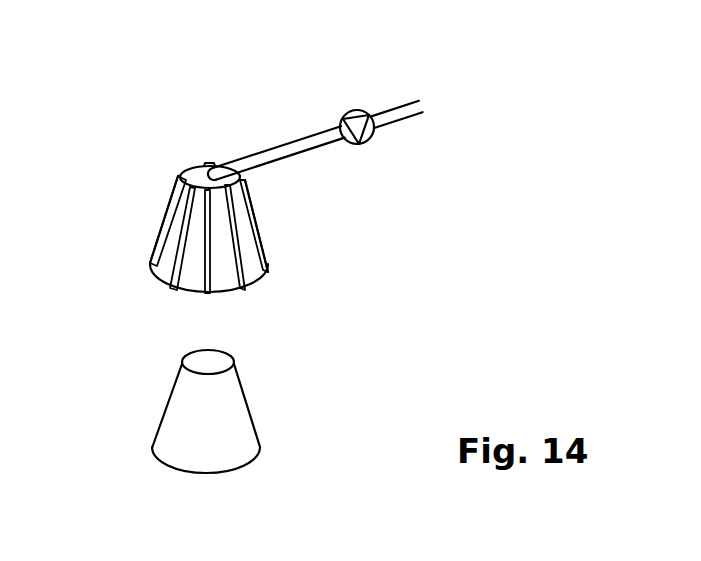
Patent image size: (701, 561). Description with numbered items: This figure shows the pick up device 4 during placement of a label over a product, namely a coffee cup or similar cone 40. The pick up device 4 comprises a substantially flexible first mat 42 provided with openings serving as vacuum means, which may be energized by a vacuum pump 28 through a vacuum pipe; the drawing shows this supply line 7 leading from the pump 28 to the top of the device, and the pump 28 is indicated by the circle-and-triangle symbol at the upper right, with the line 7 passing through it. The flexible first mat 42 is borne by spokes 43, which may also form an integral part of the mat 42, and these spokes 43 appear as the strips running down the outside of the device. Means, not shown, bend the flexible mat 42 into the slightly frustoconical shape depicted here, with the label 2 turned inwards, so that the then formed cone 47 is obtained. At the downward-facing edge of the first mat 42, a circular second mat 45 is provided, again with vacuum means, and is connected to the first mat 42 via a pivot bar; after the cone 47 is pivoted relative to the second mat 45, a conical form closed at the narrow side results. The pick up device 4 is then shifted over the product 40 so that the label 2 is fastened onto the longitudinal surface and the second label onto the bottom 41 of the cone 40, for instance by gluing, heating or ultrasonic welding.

The label 2 is at (149, 290).
The pick up device 4 is at (166, 154).
The second mat 45 is at (198, 175).
The cone 47 is at (143, 216).
The first mat 42 is at (165, 257).
The spokes 43 is at (265, 233).
The supply tube 7 is at (292, 142).
The vacuum pump 28 is at (355, 110).
The cone 40 is at (277, 398).
The bottom 41 is at (202, 362).